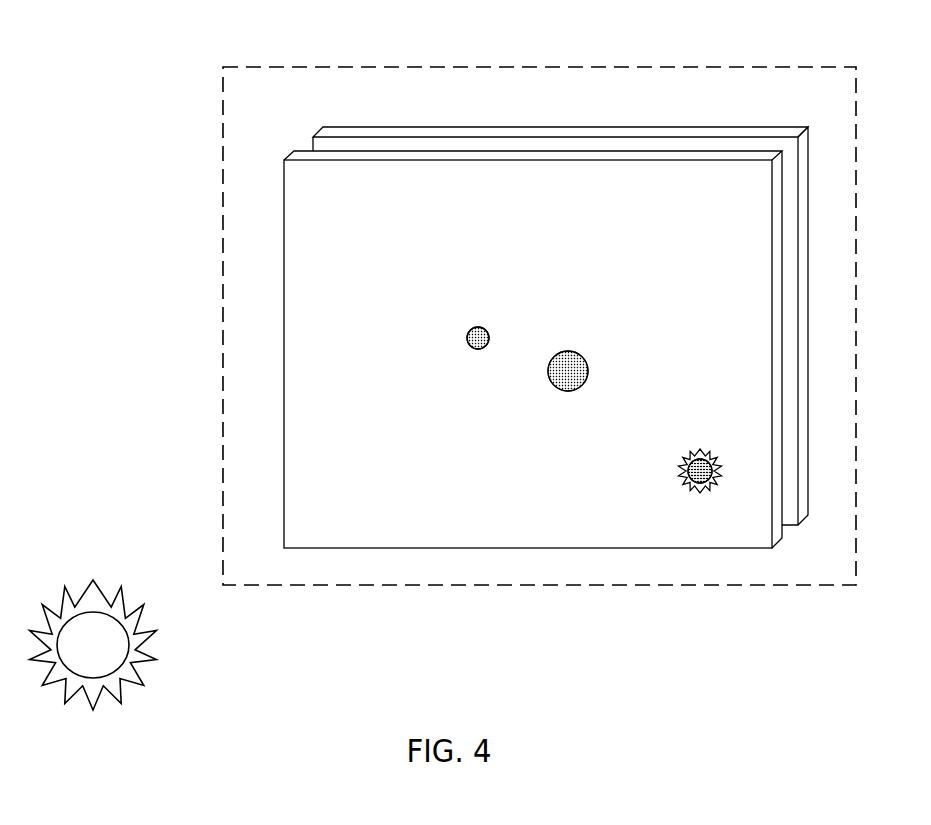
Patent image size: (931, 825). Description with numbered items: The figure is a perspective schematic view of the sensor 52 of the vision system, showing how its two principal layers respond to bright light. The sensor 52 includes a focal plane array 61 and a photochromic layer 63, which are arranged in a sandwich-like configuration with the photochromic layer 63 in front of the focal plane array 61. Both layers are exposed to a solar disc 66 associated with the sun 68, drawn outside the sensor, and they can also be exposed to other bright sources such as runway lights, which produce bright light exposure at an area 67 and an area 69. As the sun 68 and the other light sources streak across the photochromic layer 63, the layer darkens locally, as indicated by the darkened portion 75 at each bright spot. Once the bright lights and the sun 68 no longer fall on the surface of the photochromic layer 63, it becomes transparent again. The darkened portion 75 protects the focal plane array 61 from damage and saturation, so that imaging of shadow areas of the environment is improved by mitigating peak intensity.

The sensor 52 is at (291, 67).
The focal plane array 61 is at (783, 127).
The photochromic layer 63 is at (287, 168).
The solar disc 66 is at (688, 487).
The area 67 is at (468, 345).
The sun 68 is at (93, 625).
The area 69 is at (555, 388).
The darkened portion 75 is at (483, 333).